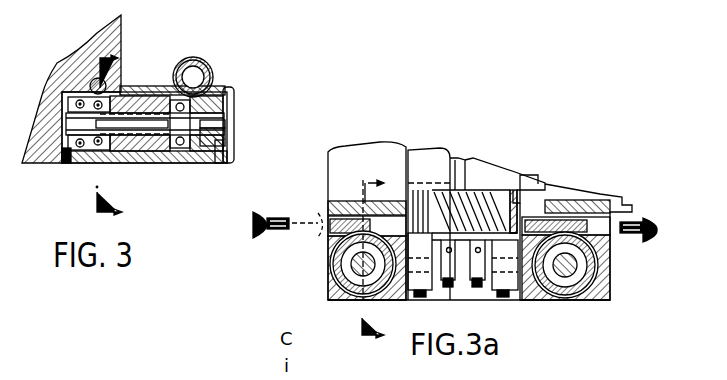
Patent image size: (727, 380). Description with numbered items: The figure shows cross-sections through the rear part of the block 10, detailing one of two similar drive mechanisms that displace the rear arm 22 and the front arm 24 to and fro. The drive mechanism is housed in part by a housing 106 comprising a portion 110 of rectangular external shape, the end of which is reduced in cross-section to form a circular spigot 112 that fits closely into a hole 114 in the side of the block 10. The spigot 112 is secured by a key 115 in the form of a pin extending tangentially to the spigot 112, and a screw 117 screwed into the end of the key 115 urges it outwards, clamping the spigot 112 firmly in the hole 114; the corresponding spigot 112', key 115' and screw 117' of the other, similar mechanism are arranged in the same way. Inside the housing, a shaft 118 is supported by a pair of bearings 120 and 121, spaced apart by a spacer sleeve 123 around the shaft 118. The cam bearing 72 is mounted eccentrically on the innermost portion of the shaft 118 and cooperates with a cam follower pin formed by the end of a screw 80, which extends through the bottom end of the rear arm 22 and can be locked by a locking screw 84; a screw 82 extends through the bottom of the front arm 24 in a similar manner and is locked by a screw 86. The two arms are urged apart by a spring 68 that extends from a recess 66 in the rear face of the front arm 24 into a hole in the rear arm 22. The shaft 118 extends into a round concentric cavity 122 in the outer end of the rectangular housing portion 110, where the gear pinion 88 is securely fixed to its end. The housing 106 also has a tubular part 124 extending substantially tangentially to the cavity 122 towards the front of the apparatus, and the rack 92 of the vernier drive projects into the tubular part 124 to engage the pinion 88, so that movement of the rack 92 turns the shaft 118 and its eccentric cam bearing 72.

In FIG. 3A, the block 10 is at (365, 157).
In FIG. 3A, the rear arm 22 is at (430, 160).
In FIG. 3A, the front arm 24 is at (528, 187).
In FIG. 3A, the recess 66 is at (493, 190).
In FIG. 3A, the spring 68 is at (460, 182).
In FIG. 3, the cam bearing 72 is at (88, 80).
In FIG. 3A, the screw 80 is at (449, 293).
In FIG. 3A, the screw 82 is at (476, 293).
In FIG. 3A, the locking screw 84 is at (422, 298).
In FIG. 3A, the screw 86 is at (515, 298).
In FIG. 3, the gear pinion 88 is at (233, 137).
In FIG. 3, the rack 92 is at (213, 70).
In FIG. 3, the housing 106 is at (227, 166).
In FIG. 3, the housing portion 110 is at (196, 164).
In FIG. 3, the spigot 112 is at (126, 167).
In FIG. 3A, the spigot 112 is at (302, 306).
In FIG. 3A, the spigot 112' is at (589, 271).
In FIG. 3, the hole 114 is at (63, 163).
In FIG. 3A, the hole 114 is at (333, 268).
In FIG. 3, the key 115 is at (71, 81).
In FIG. 3A, the key 115 is at (348, 179).
In FIG. 3A, the key 115' is at (576, 221).
In FIG. 3A, the screw 117 is at (329, 237).
In FIG. 3A, the screw 117' is at (589, 248).
In FIG. 3, the shaft 118 is at (155, 164).
In FIG. 3A, the shaft 118 is at (370, 302).
In FIG. 3, the bearing 120 is at (128, 92).
In FIG. 3, the bearing 121 is at (163, 86).
In FIG. 3, the cavity 122 is at (233, 94).
In FIG. 3, the spacer sleeve 123 is at (138, 164).
In FIG. 3, the tubular part 124 is at (201, 57).